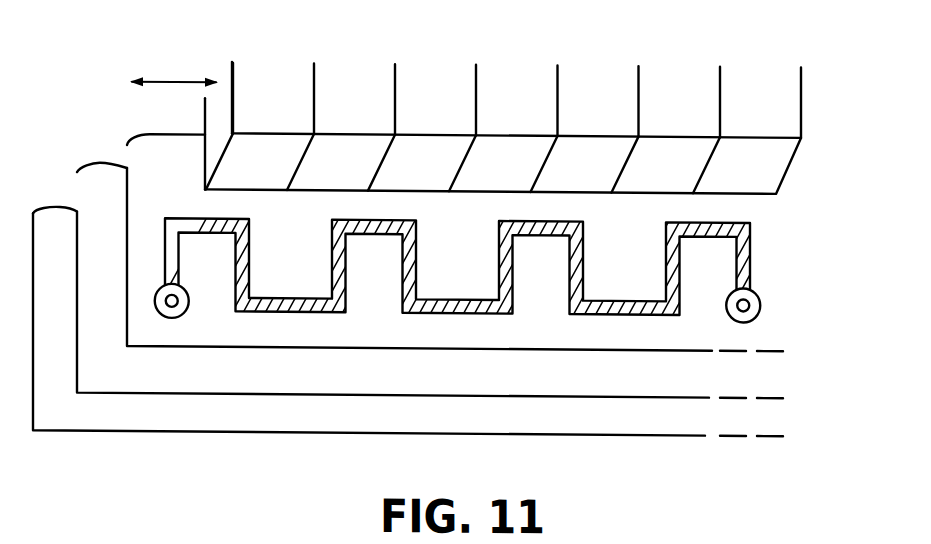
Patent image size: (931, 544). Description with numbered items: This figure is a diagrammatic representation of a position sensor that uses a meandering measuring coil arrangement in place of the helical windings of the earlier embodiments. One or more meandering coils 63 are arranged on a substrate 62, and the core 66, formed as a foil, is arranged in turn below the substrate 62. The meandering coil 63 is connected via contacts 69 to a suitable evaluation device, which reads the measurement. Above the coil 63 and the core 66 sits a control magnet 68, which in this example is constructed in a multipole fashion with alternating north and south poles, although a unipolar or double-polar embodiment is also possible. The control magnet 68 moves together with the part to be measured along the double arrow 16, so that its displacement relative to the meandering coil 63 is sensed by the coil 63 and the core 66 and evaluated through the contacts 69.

The double arrow 16 is at (174, 73).
The control magnet 68 is at (372, 76).
The meandering coil 63 is at (165, 249).
The contacts 69 is at (167, 317).
The substrate 62 is at (230, 372).
The core 66 is at (305, 406).